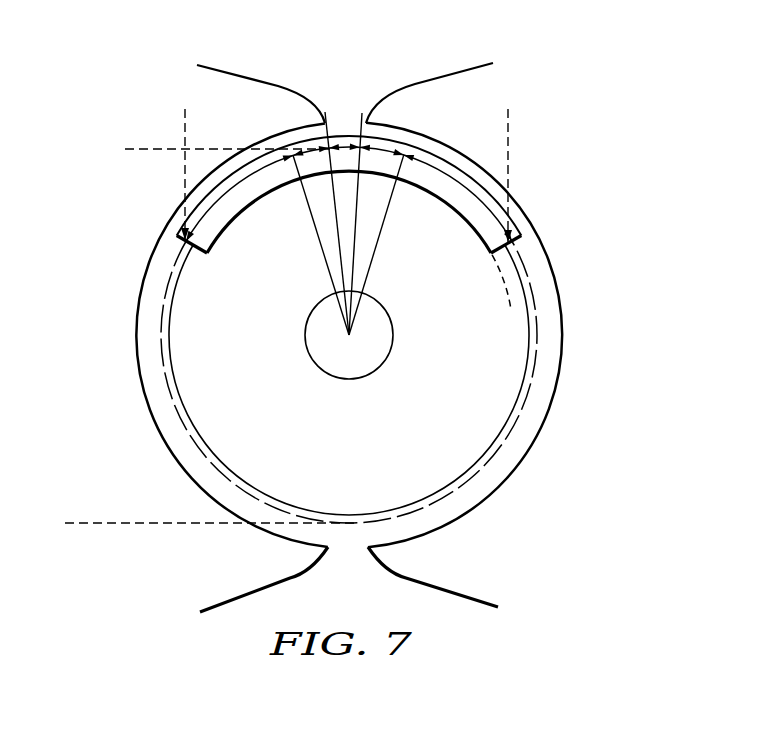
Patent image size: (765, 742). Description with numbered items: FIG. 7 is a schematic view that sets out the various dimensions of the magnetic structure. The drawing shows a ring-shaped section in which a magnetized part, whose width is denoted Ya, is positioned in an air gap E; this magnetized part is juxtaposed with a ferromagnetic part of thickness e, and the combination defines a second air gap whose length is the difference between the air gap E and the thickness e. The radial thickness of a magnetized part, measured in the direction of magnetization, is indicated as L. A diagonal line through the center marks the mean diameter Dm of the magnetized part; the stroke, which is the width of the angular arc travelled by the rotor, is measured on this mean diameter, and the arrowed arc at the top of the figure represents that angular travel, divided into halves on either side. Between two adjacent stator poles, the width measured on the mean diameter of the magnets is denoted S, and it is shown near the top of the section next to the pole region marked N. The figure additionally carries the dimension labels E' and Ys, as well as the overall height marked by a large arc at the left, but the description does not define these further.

The thickness of magnetized part L is at (512, 198).
The air gap E is at (349, 194).
The mean diameter of the magnetized part Dm is at (476, 208).
The thickness of ferromagnetic part e is at (567, 276).
The pole transition width E' is at (347, 242).
The north pole N is at (344, 218).
The width between adjacent stator poles S is at (349, 275).
The yoke height Ys is at (158, 150).
The width of the magnetized part Ya is at (508, 109).